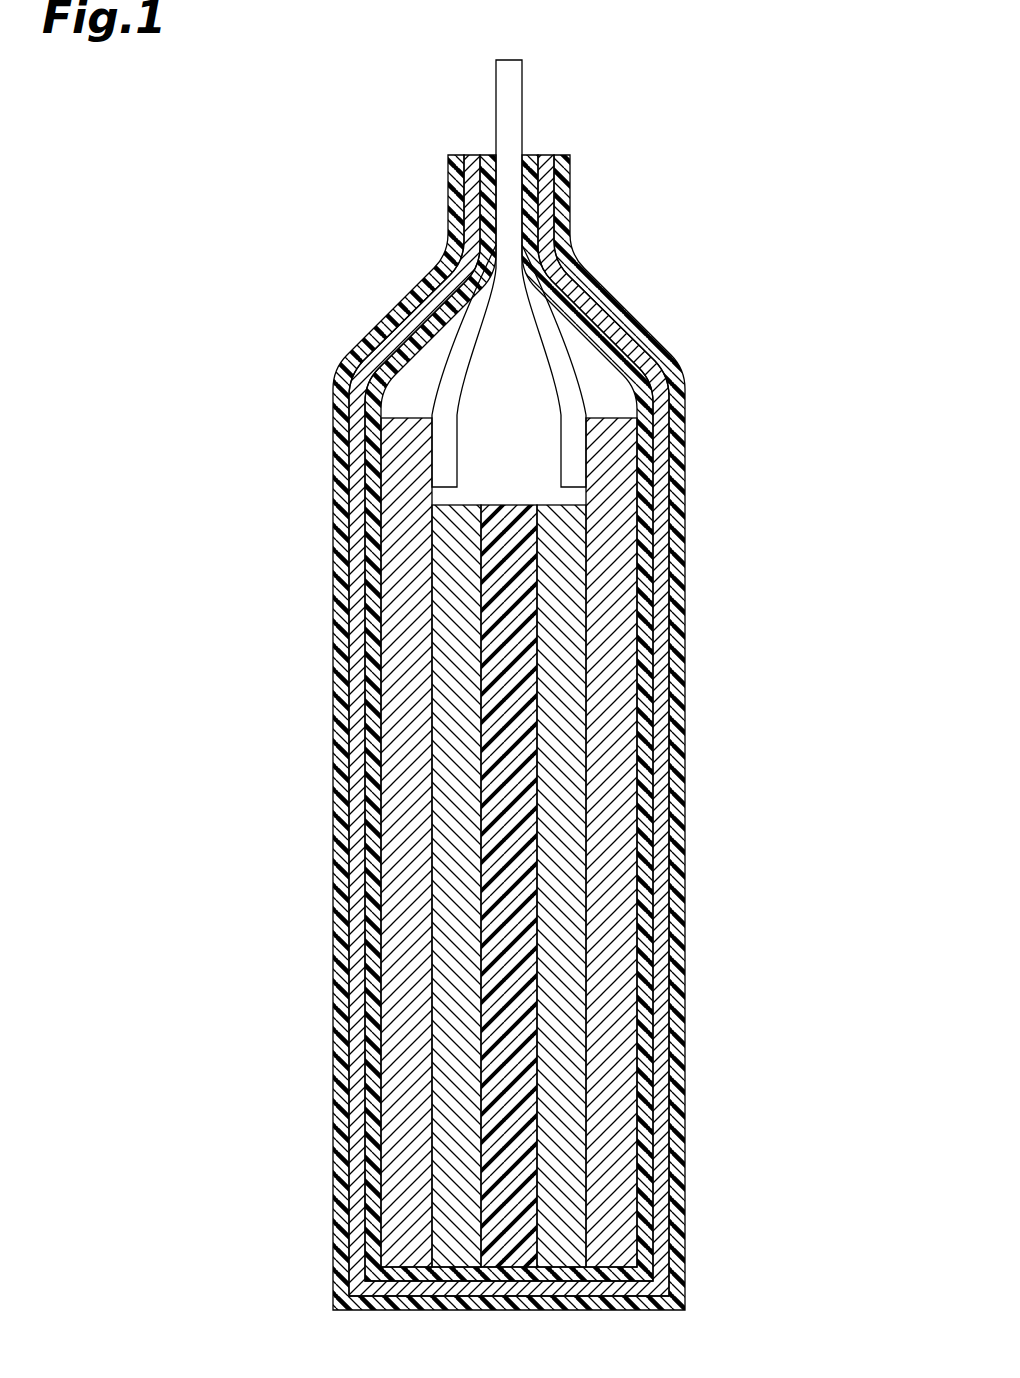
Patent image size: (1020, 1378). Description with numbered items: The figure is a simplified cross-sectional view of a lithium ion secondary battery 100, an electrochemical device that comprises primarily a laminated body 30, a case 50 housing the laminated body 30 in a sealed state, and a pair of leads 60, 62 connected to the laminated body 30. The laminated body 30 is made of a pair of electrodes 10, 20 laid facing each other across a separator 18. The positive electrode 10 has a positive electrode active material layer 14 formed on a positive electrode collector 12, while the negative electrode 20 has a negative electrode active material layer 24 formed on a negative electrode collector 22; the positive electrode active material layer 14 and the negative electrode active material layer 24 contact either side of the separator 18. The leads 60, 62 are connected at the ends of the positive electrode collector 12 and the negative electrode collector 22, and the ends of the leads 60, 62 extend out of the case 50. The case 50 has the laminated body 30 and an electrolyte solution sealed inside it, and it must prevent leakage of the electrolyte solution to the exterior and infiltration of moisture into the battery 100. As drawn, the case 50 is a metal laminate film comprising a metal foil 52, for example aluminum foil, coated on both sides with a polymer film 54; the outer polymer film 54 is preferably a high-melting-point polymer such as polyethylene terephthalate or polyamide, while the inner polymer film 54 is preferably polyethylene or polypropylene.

The lithium ion secondary battery 100 is at (758, 100).
The positive electrode 10 is at (416, 842).
The positive electrode collector 12 is at (593, 633).
The positive electrode active material layer 14 is at (557, 673).
The separator 18 is at (503, 720).
The negative electrode 20 is at (338, 842).
The negative electrode collector 22 is at (400, 797).
The negative electrode active material layer 24 is at (450, 760).
The laminated body 30 is at (387, 842).
The case 50 is at (584, 732).
The metal foil 52 is at (657, 910).
The polymer film 54 is at (652, 870).
The lead 60 is at (478, 326).
The lead 62 is at (540, 326).